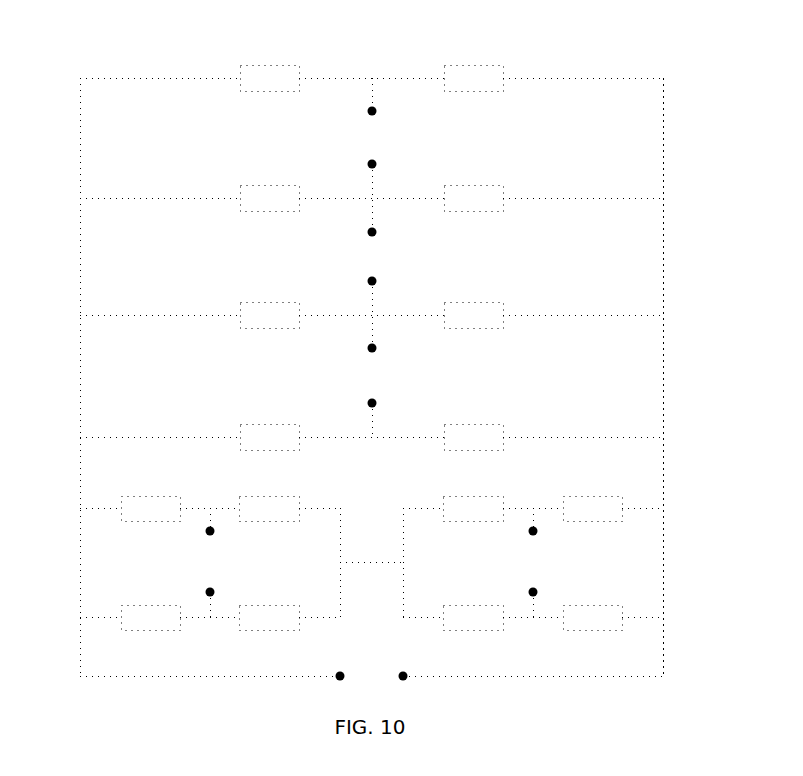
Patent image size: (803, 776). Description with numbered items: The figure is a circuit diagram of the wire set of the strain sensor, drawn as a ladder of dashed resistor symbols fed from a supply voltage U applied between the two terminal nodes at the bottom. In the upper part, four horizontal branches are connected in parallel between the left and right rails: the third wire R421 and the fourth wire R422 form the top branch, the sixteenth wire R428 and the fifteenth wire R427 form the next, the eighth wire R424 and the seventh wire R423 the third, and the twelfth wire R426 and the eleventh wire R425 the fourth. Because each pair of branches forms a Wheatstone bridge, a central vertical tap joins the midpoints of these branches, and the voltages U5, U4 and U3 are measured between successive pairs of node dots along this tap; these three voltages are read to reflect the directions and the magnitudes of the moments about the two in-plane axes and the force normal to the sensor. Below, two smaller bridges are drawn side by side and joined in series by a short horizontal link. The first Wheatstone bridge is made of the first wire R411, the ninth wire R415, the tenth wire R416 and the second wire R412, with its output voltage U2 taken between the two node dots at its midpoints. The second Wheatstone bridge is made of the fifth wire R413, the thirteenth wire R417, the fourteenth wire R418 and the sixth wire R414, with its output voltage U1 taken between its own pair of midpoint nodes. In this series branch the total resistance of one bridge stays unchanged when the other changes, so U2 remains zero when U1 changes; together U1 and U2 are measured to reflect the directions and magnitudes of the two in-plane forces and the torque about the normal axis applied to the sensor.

The third wire R421 is at (270, 67).
The fourth wire R422 is at (474, 67).
The sixteenth wire R428 is at (270, 184).
The fifteenth wire R427 is at (474, 184).
The eighth wire R424 is at (270, 301).
The seventh wire R423 is at (474, 301).
The twelfth wire R426 is at (270, 423).
The eleventh wire R425 is at (474, 425).
The first wire R411 is at (151, 497).
The ninth wire R415 is at (270, 497).
The tenth wire R416 is at (151, 603).
The second wire R412 is at (270, 606).
The fifth wire R413 is at (474, 497).
The thirteenth wire R417 is at (593, 496).
The fourteenth wire R418 is at (474, 605).
The sixth wire R414 is at (593, 602).
The voltage U1 is at (535, 562).
The voltage U2 is at (213, 562).
The voltage U3 is at (373, 376).
The voltage U4 is at (373, 257).
The voltage U5 is at (372, 138).
The supply voltage U is at (372, 676).